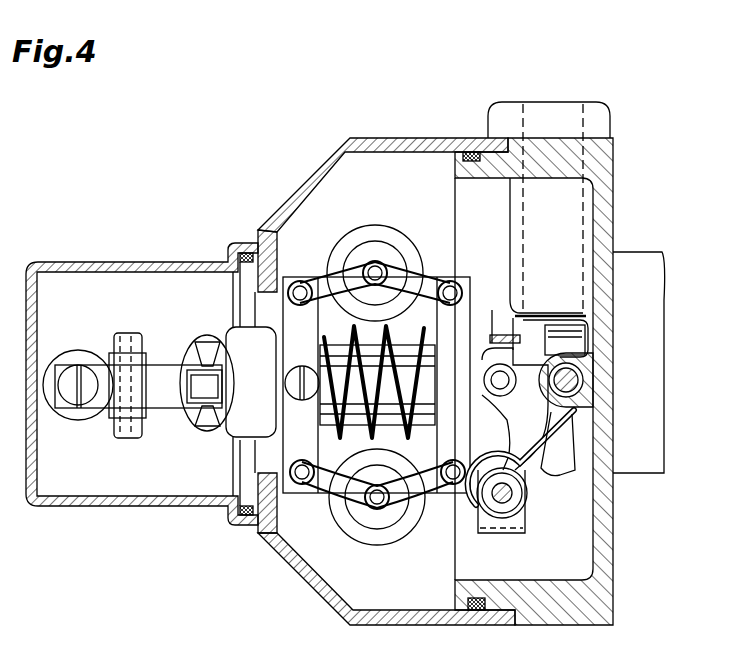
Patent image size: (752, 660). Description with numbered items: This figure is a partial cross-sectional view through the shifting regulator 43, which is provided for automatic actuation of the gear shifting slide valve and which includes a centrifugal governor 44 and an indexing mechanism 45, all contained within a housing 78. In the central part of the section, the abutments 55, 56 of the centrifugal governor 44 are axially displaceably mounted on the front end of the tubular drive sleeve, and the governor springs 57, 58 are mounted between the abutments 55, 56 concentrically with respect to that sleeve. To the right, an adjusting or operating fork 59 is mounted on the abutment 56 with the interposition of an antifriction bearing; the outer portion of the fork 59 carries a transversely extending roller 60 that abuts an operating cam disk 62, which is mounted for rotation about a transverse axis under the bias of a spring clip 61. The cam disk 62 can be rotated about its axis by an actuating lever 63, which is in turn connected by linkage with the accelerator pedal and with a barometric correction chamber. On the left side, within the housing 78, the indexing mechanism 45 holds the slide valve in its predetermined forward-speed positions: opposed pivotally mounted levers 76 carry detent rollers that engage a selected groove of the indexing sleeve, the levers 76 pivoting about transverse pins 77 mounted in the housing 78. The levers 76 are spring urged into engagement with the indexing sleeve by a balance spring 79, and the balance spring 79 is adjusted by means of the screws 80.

The shifting regulator 43 is at (305, 594).
The centrifugal governor 44 is at (375, 228).
The indexing mechanism 45 is at (175, 410).
The abutment 55 is at (290, 282).
The abutment 56 is at (455, 282).
The governor spring 57 is at (420, 432).
The governor spring 58 is at (355, 432).
The operating fork 59 is at (533, 322).
The roller 60 is at (497, 338).
The spring clip 61 is at (505, 522).
The operating cam disk 62 is at (563, 478).
The actuating lever 63 is at (578, 378).
The lever 76 is at (159, 366).
The transverse pin 77 is at (127, 440).
The housing 78 is at (276, 204).
The balance spring 79 is at (80, 420).
The screw 80 is at (82, 365).